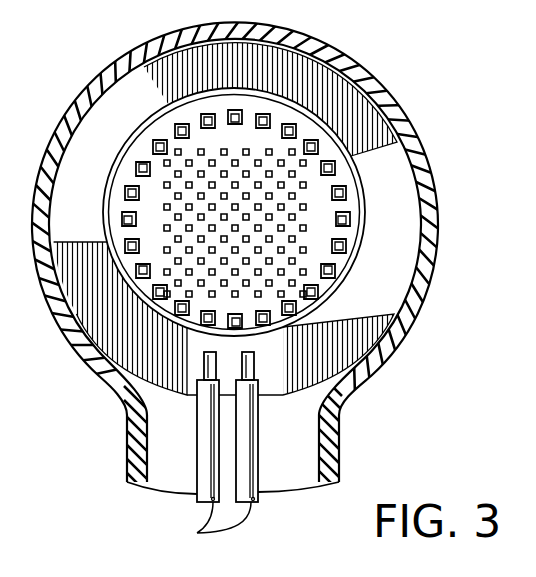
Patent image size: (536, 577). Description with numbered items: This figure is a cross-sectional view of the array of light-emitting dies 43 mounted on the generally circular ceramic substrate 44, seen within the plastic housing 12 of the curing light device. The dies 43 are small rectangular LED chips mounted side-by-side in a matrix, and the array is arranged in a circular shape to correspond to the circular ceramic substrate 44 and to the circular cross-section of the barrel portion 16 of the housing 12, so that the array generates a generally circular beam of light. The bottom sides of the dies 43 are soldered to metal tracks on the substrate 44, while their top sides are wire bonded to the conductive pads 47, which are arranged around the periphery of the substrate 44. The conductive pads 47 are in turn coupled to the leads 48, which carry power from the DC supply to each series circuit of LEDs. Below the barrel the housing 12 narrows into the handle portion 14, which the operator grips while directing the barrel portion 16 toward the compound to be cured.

The housing 12 is at (394, 92).
The barrel portion 16 is at (118, 57).
The handle portion 14 is at (340, 445).
The ceramic substrate 44 is at (350, 178).
The light-emitting dies 43 is at (200, 150).
The conductive pads 47 is at (347, 244).
The leads 48 is at (197, 533).